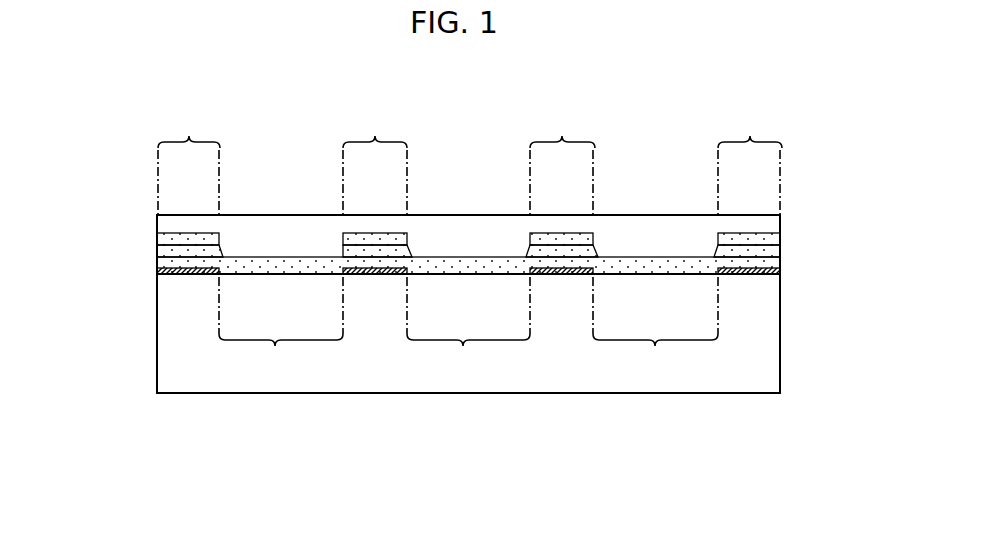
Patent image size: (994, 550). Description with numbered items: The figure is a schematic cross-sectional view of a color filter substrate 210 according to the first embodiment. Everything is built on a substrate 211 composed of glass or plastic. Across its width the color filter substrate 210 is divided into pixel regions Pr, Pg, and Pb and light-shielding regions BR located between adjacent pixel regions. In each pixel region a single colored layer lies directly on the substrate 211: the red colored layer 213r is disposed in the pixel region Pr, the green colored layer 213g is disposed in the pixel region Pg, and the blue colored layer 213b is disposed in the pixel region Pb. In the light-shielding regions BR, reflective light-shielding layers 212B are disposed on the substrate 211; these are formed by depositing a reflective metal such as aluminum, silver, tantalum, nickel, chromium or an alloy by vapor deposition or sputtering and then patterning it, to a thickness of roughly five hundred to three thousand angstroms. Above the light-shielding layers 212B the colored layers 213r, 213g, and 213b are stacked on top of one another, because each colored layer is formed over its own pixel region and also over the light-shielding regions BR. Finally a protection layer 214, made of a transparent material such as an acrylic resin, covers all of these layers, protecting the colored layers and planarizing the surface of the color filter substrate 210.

The color filter substrate 210 is at (498, 90).
The substrate 211 is at (417, 385).
The reflective light-shielding layer 212B is at (183, 277).
The red colored layer 213r is at (285, 262).
The green colored layer 213g is at (158, 237).
The blue colored layer 213b is at (158, 250).
The protection layer 214 is at (776, 225).
The light-shielding region BR is at (470, 159).
The red pixel region Pr is at (281, 328).
The green pixel region Pg is at (468, 329).
The blue pixel region Pb is at (655, 328).